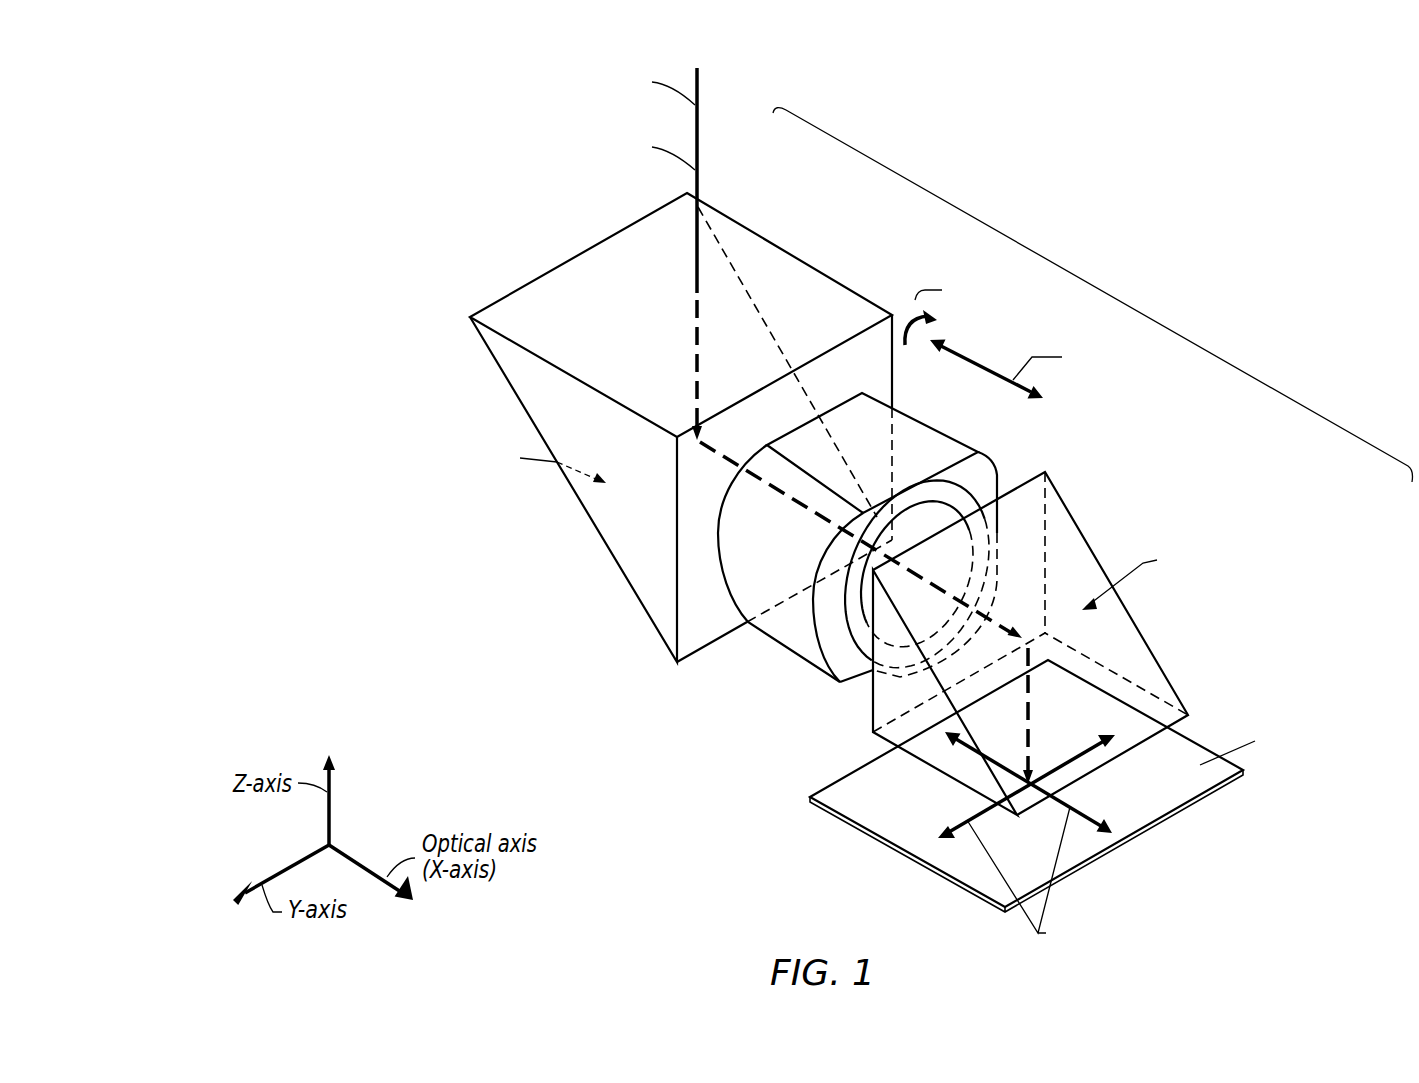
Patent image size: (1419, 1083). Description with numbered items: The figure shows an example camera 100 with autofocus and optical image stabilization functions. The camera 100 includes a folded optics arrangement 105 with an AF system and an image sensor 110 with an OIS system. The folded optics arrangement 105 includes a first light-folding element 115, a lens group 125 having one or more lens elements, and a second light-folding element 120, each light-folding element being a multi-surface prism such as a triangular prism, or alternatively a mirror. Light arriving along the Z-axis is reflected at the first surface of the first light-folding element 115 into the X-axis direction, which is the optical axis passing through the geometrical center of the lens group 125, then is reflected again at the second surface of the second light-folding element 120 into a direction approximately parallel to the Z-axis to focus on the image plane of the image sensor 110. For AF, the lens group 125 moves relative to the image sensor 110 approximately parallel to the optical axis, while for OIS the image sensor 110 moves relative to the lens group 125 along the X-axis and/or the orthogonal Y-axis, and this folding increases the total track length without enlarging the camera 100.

The camera 100 is at (199, 133).
The folded optics arrangement 105 is at (1093, 293).
The image sensor 110 is at (1200, 802).
The first light-folding element 115 is at (583, 252).
The second light-folding element 120 is at (872, 717).
The lens group 125 is at (790, 650).